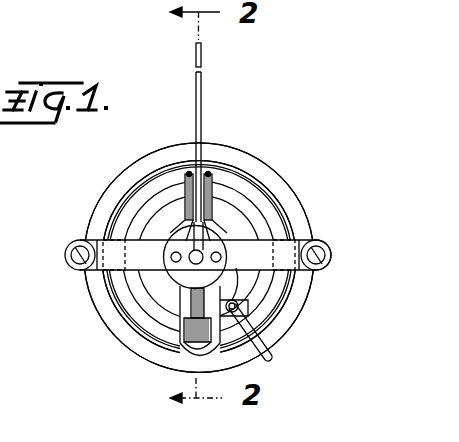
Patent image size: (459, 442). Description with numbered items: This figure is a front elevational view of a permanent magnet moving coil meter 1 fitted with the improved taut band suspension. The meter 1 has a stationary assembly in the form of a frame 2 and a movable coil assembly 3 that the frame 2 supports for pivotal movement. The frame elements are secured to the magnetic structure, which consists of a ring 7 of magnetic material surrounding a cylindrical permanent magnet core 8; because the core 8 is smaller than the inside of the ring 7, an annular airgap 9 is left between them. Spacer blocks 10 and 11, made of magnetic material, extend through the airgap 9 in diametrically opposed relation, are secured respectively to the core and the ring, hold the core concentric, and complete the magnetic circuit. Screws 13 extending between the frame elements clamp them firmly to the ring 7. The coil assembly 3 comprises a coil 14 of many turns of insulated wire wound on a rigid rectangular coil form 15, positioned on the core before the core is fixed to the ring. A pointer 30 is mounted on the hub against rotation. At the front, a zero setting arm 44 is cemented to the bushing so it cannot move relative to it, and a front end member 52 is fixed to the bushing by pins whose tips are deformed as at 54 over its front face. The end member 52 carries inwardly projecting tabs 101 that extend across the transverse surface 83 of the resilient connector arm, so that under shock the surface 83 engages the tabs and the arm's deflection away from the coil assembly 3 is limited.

The permanent magnet moving coil meter 1 is at (279, 161).
The frame 2 is at (331, 242).
The coil assembly 3 is at (215, 189).
The ring 7 is at (138, 158).
The permanent magnet core 8 is at (138, 210).
The annular airgap 9 is at (167, 182).
The spacer block 10 is at (103, 284).
The spacer block 11 is at (292, 215).
The screws 13 is at (74, 241).
The coil 14 is at (214, 181).
The coil form 15 is at (213, 207).
The pointer 30 is at (201, 90).
The zero setting arm 44 is at (222, 350).
The front end member 52 is at (180, 290).
The deformed pin tips 54 is at (176, 268).
The transverse surface 83 is at (192, 232).
The tabs 101 is at (175, 242).